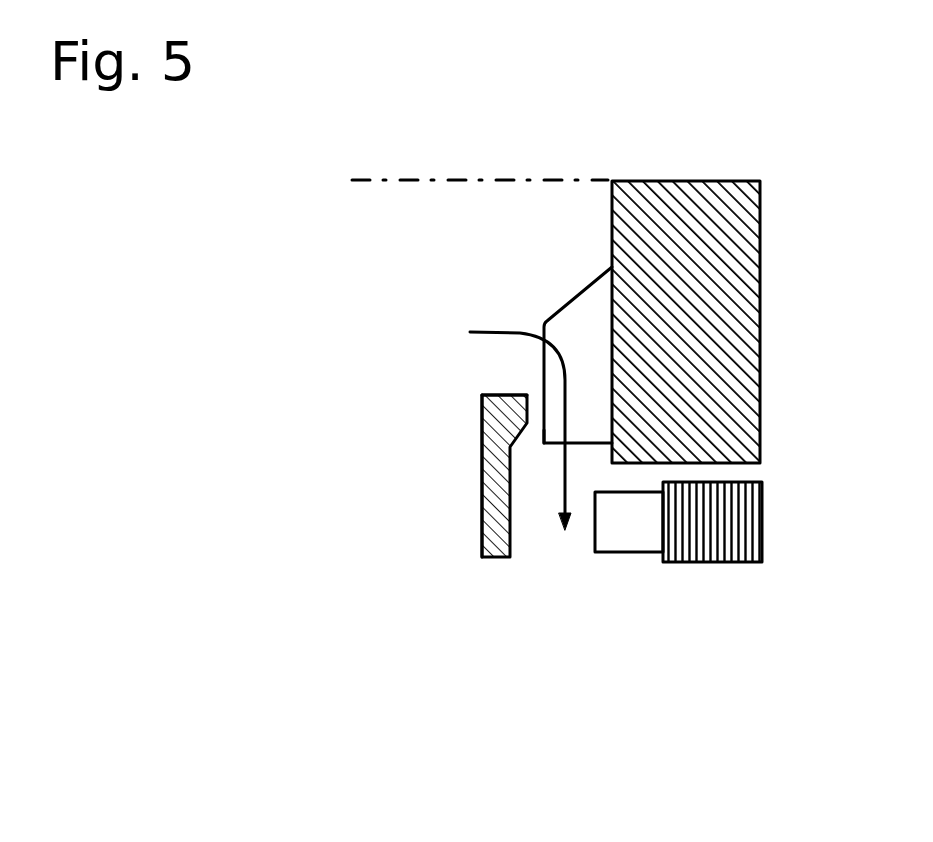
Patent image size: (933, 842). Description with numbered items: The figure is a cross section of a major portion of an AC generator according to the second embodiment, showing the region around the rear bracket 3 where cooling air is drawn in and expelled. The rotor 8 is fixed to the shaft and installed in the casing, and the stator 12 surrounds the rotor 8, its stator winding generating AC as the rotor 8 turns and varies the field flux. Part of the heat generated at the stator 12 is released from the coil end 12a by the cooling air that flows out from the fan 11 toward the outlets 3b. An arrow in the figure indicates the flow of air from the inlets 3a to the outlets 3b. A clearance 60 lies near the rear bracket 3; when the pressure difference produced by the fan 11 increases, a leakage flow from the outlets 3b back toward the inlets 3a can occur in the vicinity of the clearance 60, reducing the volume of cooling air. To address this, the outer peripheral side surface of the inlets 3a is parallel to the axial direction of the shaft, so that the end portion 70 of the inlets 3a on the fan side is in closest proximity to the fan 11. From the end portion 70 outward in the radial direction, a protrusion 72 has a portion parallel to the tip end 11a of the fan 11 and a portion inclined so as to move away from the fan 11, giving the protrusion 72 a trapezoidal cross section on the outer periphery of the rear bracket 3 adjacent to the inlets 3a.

The rear bracket 3 is at (482, 523).
The inlets 3a is at (490, 288).
The rear-side outlet 3b is at (568, 560).
The rotor 8 is at (748, 303).
The fan 11 is at (597, 300).
The tip end of the fan 11a is at (540, 447).
The stator 12 is at (743, 542).
The coil end 12a is at (630, 540).
The clearance 60 is at (480, 438).
The end portion of the inlets 70 is at (522, 393).
The protrusion 72 is at (488, 411).